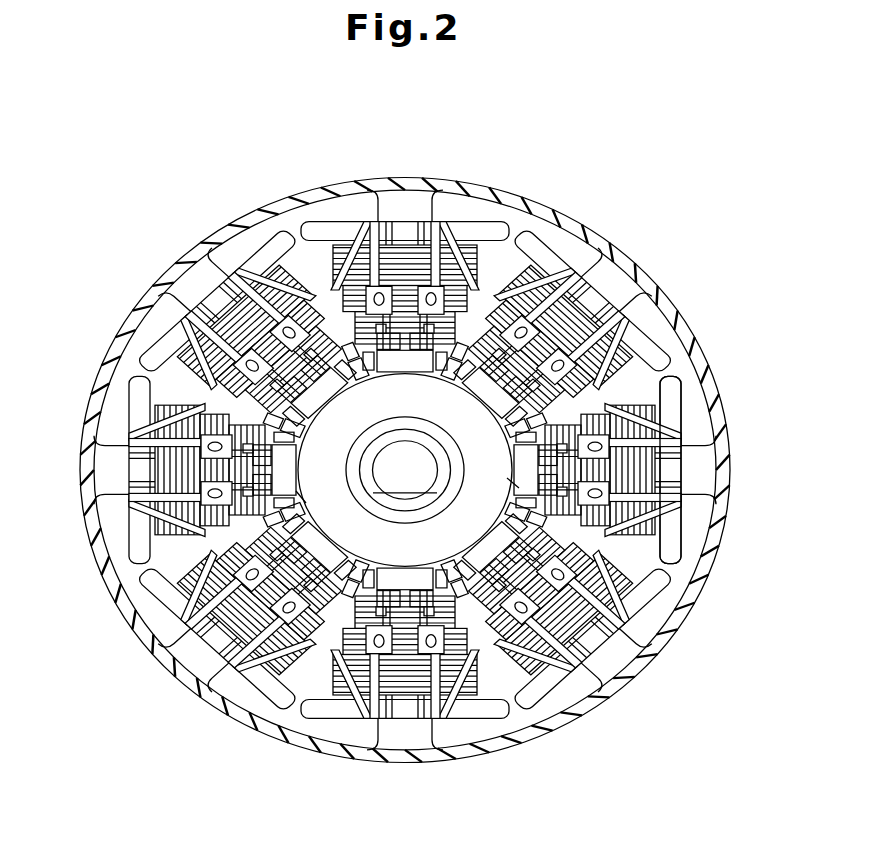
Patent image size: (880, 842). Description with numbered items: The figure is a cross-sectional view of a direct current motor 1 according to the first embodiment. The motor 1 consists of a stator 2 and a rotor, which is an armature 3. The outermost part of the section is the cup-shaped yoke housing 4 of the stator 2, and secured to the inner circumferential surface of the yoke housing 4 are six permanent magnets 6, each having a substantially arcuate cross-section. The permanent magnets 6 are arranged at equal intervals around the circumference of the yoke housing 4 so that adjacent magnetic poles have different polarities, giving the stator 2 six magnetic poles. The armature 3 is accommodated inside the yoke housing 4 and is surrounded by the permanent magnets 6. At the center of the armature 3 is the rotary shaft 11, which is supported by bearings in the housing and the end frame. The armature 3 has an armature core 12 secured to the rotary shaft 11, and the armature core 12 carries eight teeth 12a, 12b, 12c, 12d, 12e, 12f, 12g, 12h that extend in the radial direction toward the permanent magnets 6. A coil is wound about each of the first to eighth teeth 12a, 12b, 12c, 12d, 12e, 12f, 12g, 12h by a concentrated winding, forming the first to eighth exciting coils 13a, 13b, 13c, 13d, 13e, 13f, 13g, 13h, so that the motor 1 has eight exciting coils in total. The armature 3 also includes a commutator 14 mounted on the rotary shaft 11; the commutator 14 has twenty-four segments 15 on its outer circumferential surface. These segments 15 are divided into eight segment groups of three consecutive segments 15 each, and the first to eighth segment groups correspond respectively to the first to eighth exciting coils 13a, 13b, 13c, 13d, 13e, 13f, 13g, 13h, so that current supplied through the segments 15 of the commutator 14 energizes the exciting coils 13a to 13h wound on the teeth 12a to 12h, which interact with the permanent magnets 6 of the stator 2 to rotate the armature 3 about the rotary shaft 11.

The motor 1 is at (650, 181).
The stator 2 is at (487, 186).
The armature 3 is at (547, 216).
The yoke housing 4 is at (690, 313).
The permanent magnets 6 is at (300, 213).
The rotary shaft 11 is at (403, 446).
The armature core 12 is at (695, 394).
The first tooth 12a is at (678, 471).
The second tooth 12b is at (598, 640).
The third tooth 12c is at (406, 716).
The fourth tooth 12d is at (215, 635).
The fifth tooth 12e is at (225, 461).
The sixth tooth 12f is at (215, 292).
The seventh tooth 12g is at (406, 226).
The eighth tooth 12h is at (598, 300).
The first exciting coil 13a is at (610, 398).
The second exciting coil 13b is at (612, 547).
The third exciting coil 13c is at (475, 656).
The fourth exciting coil 13d is at (335, 656).
The fifth exciting coil 13e is at (205, 532).
The sixth exciting coil 13f is at (203, 390).
The seventh exciting coil 13g is at (343, 270).
The eighth exciting coil 13h is at (478, 284).
The commutator 14 is at (407, 533).
The segments 15 is at (478, 394).